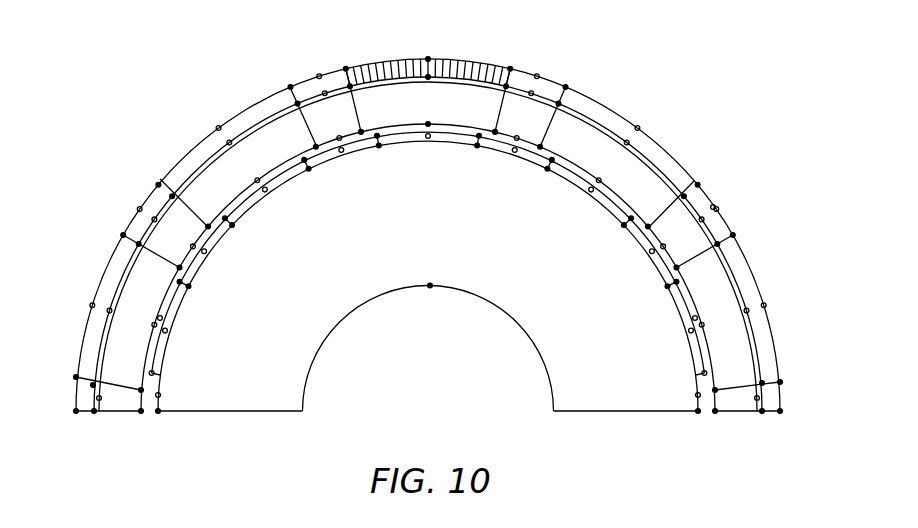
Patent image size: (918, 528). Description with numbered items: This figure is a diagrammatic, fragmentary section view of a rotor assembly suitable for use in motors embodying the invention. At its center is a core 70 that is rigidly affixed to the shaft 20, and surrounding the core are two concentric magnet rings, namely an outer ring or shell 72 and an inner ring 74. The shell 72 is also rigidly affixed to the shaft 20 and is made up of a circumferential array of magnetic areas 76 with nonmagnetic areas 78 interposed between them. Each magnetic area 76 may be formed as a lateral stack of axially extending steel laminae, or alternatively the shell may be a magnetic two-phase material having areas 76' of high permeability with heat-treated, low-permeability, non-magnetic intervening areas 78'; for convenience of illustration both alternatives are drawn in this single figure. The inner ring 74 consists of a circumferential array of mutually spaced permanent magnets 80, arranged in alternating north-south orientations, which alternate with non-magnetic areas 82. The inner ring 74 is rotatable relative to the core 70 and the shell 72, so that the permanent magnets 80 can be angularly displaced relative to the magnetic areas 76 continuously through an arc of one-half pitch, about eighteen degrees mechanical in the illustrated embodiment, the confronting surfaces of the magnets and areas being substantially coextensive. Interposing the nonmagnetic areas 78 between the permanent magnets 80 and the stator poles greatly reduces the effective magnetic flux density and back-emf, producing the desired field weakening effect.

The shaft 20 is at (403, 372).
The core 70 is at (306, 284).
The outer ring (shell) 72 is at (215, 128).
The inner ring 74 is at (495, 140).
The magnetic areas 76 is at (429, 55).
The areas of high permeability 76' is at (656, 241).
The nonmagnetic areas 78 is at (341, 222).
The non-magnetic intervening areas 78' is at (600, 244).
The permanent magnets 80 is at (395, 110).
The non-magnetic areas 82 is at (168, 190).